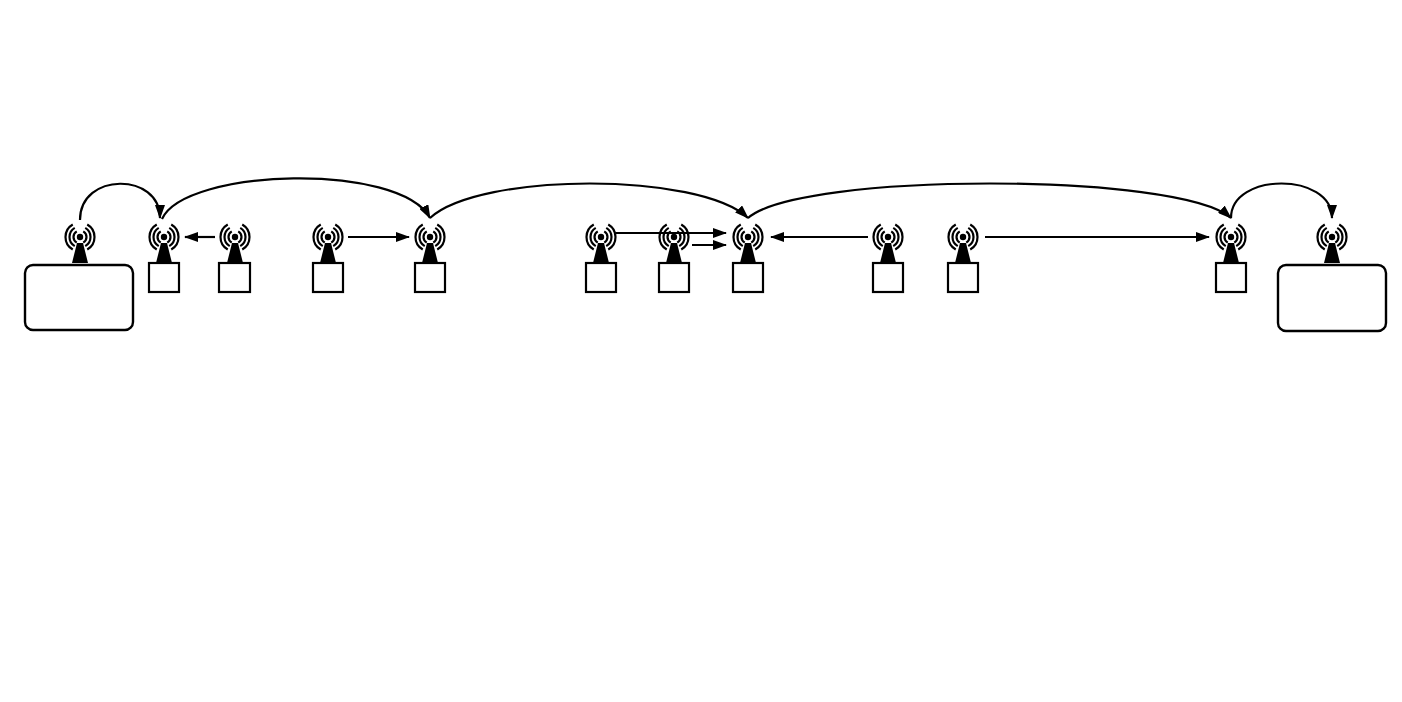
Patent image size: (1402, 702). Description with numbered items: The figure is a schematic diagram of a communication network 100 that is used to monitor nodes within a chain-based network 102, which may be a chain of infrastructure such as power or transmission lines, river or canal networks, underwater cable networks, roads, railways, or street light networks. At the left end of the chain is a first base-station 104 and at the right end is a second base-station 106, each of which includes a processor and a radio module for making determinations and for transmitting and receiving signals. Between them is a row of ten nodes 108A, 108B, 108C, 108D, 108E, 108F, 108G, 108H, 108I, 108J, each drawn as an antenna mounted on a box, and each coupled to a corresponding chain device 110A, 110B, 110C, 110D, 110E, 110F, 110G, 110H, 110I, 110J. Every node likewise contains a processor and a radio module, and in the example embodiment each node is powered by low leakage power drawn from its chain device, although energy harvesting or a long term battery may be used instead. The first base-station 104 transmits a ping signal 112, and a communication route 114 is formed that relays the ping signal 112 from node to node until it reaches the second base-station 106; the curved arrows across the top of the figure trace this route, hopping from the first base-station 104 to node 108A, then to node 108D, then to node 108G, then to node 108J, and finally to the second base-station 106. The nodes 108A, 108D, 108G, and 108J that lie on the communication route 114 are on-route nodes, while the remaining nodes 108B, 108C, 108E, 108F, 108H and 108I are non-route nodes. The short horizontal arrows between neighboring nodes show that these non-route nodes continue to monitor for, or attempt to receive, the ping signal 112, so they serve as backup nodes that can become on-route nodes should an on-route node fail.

The communication network 100 is at (246, 112).
The chain-based network 102 is at (245, 423).
The first base-station 104 is at (53, 331).
The second base-station 106 is at (1303, 332).
The node 108A is at (170, 253).
The node 108B is at (241, 253).
The node 108C is at (334, 253).
The node 108D is at (436, 253).
The node 108E is at (607, 253).
The node 108F is at (680, 253).
The node 108G is at (754, 253).
The node 108H is at (894, 253).
The node 108I is at (969, 253).
The node 108J is at (1222, 253).
The chain device 110A is at (157, 293).
The chain device 110B is at (238, 293).
The chain device 110C is at (322, 293).
The chain device 110D is at (424, 293).
The chain device 110E is at (595, 293).
The chain device 110F is at (668, 293).
The chain device 110G is at (750, 293).
The chain device 110H is at (880, 293).
The chain device 110I is at (965, 293).
The chain device 110J is at (1235, 293).
The ping signal 112 is at (143, 184).
The communication route 114 is at (576, 164).